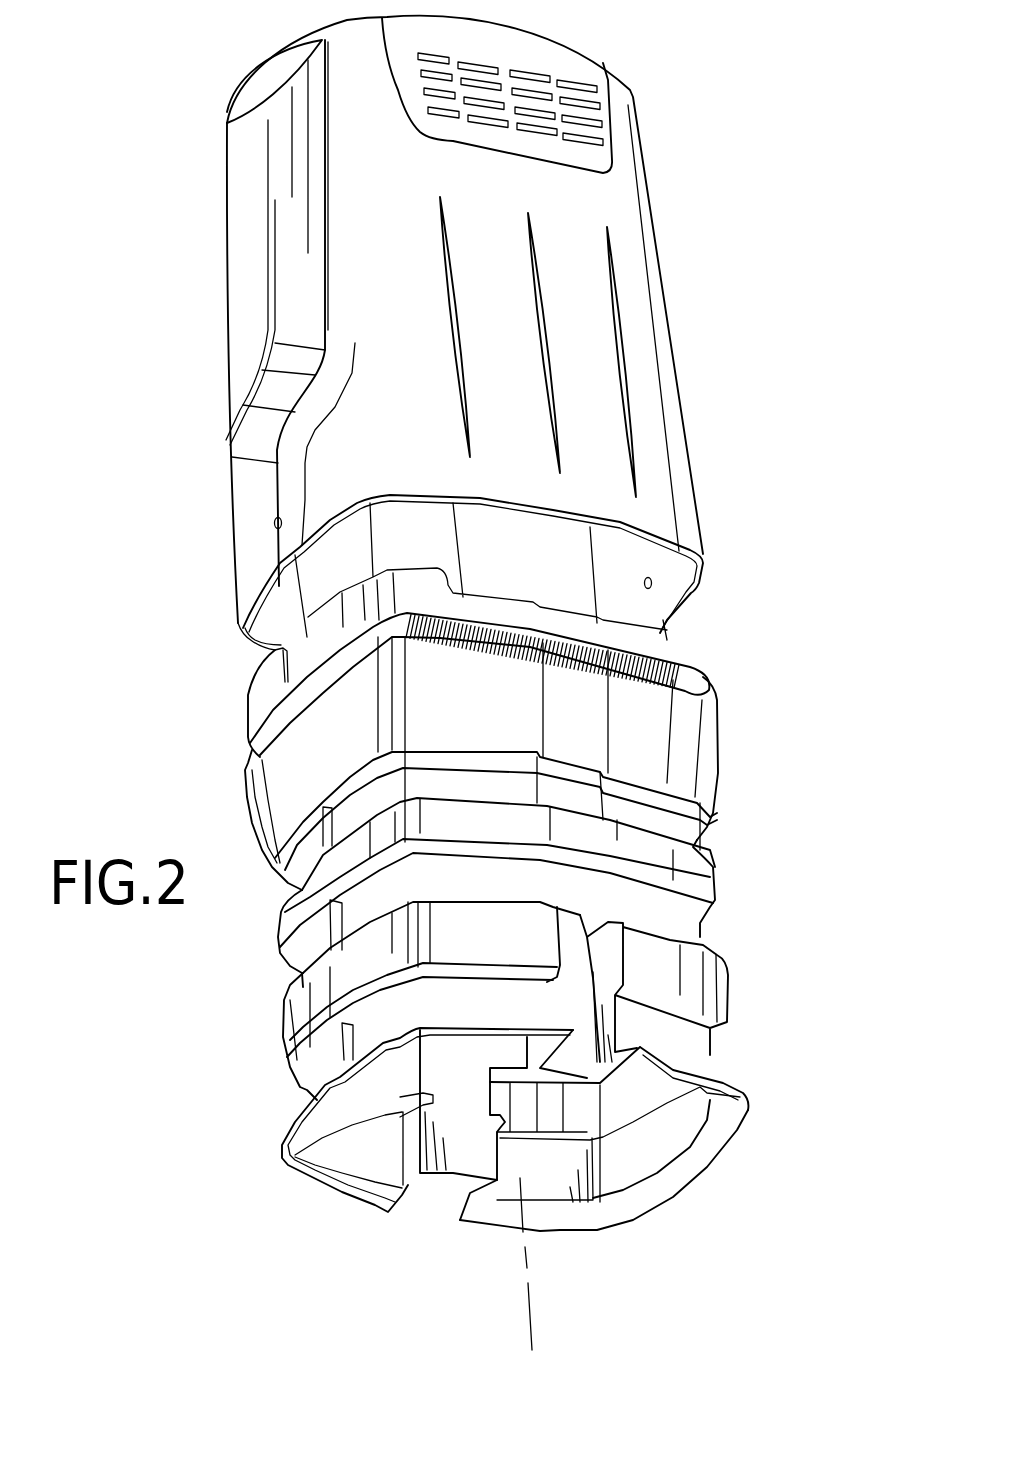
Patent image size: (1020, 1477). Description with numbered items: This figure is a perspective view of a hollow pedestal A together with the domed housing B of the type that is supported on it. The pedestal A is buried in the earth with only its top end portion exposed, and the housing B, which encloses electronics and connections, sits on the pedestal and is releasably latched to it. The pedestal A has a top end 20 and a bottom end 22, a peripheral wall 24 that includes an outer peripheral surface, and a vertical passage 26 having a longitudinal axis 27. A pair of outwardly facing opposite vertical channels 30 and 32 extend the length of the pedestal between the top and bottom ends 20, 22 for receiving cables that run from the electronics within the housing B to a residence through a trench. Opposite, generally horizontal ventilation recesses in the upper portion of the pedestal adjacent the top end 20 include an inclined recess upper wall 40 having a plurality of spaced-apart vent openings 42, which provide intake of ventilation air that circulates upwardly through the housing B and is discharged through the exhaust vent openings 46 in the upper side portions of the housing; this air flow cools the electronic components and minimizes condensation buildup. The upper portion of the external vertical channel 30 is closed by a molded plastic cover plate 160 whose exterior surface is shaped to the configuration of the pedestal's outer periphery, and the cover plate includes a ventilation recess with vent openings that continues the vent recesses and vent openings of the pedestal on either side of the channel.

The top end 20 is at (707, 638).
The bottom end 22 is at (733, 1130).
The peripheral wall 24 is at (700, 780).
The vertical passage 26 is at (548, 1223).
The longitudinal axis 27 is at (527, 1295).
The vertical channel 30 is at (610, 967).
The vertical channel 32 is at (447, 1173).
The recess upper wall 40 is at (693, 685).
The vent openings 42 is at (687, 668).
The exhaust vent openings 46 is at (540, 72).
The cover plate 160 is at (580, 730).
The pedestal A is at (742, 845).
The housing B is at (205, 411).